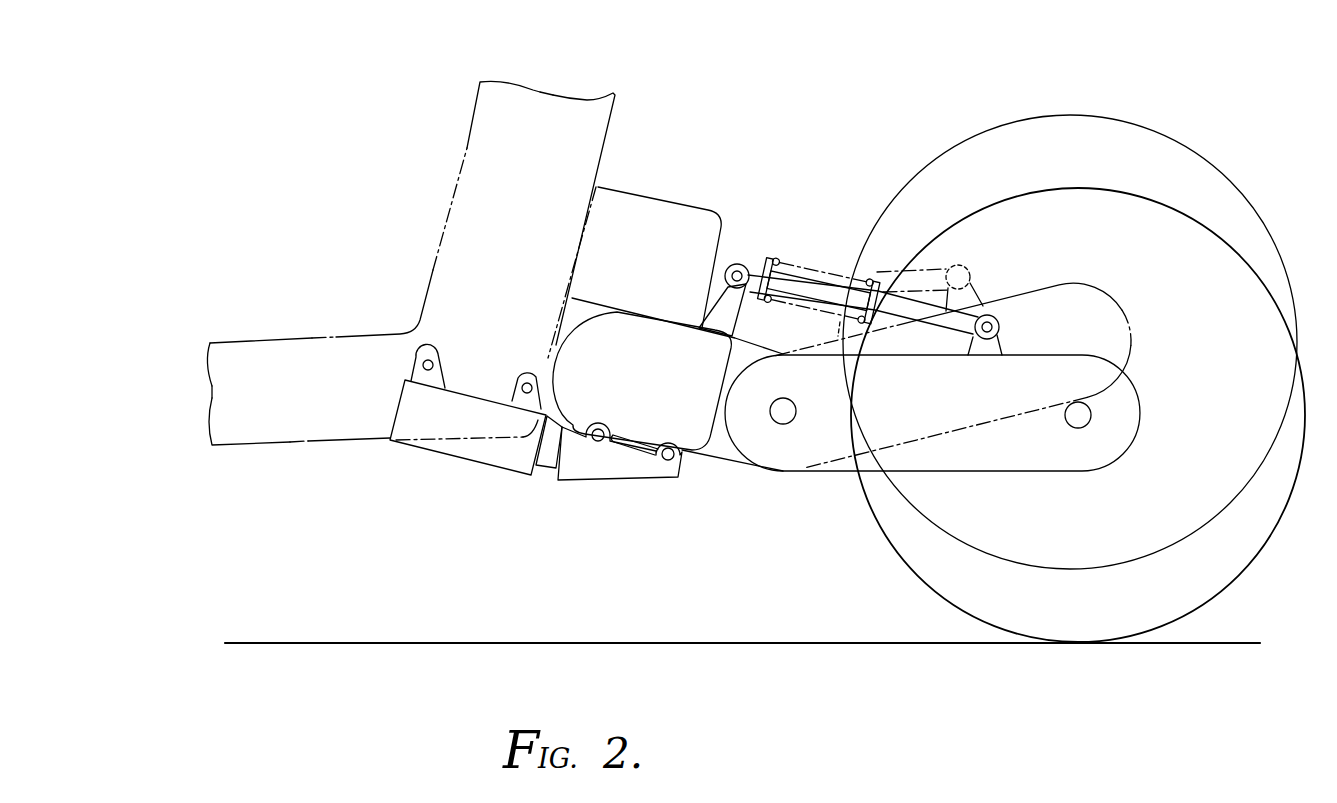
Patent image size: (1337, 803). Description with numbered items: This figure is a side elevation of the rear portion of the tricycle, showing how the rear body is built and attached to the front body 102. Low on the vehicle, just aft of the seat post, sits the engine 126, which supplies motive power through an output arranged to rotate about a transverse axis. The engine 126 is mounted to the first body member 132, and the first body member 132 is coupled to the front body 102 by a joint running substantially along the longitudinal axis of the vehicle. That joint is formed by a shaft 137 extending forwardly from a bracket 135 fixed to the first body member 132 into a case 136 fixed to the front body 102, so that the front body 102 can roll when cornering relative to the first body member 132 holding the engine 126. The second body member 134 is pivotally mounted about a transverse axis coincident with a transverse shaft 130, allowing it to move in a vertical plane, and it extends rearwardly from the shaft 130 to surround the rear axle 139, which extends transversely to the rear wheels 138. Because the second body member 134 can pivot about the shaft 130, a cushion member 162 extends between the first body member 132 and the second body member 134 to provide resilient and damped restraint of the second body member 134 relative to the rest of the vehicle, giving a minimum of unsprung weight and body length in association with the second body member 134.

The front body 102 is at (246, 356).
The engine 126 is at (722, 224).
The transverse shaft 130 is at (796, 408).
The first body member 132 is at (688, 435).
The second body member 134 is at (945, 463).
The bracket 135 is at (613, 470).
The case 136 is at (507, 457).
The shaft 137 is at (548, 470).
The rear wheels 138 is at (1192, 592).
The rear axle 139 is at (1074, 424).
The cushion member 162 is at (824, 272).